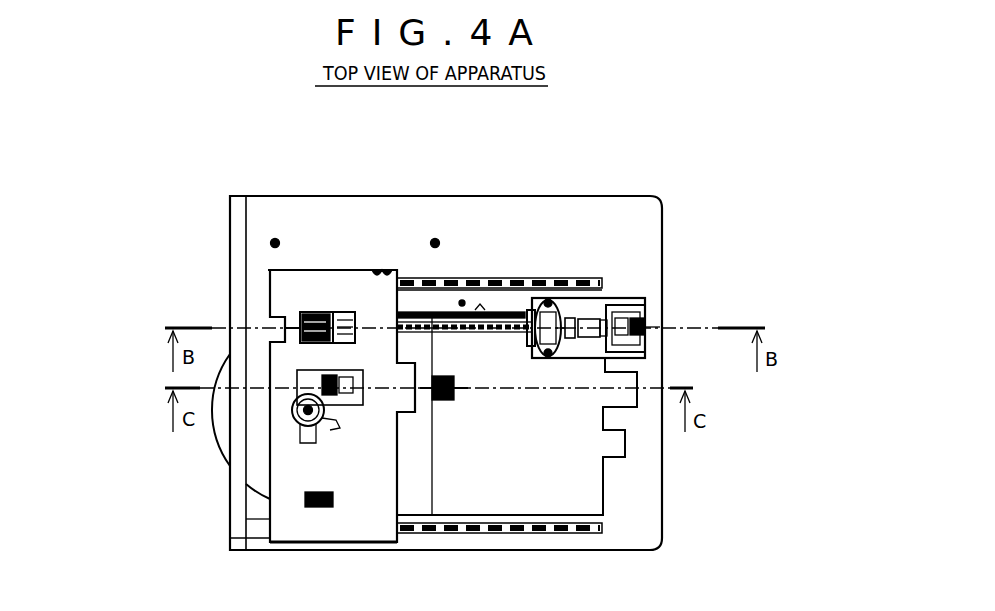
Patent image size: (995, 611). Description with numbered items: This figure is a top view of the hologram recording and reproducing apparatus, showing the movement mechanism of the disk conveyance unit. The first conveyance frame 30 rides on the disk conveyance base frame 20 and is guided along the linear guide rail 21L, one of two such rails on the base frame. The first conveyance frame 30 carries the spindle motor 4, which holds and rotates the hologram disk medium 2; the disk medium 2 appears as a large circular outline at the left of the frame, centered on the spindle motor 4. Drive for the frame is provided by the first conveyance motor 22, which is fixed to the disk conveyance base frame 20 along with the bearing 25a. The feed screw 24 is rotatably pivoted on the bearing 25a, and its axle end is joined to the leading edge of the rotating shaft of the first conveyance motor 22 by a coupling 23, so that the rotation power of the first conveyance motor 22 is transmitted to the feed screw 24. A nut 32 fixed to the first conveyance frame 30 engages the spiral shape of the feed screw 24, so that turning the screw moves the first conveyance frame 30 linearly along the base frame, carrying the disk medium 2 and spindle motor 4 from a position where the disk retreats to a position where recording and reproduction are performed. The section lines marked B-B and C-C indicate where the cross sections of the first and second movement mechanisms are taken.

The hologram disk medium 2 is at (213, 425).
The spindle motor 4 is at (302, 440).
The disk conveyance base frame 20 is at (582, 210).
The linear guide rail 21L is at (485, 535).
The first conveyance motor 22 is at (633, 312).
The coupling 23 is at (595, 317).
The feed screw 24 is at (448, 318).
The bearing 25a is at (516, 278).
The first conveyance frame 30 is at (283, 297).
The nut 32 is at (322, 310).